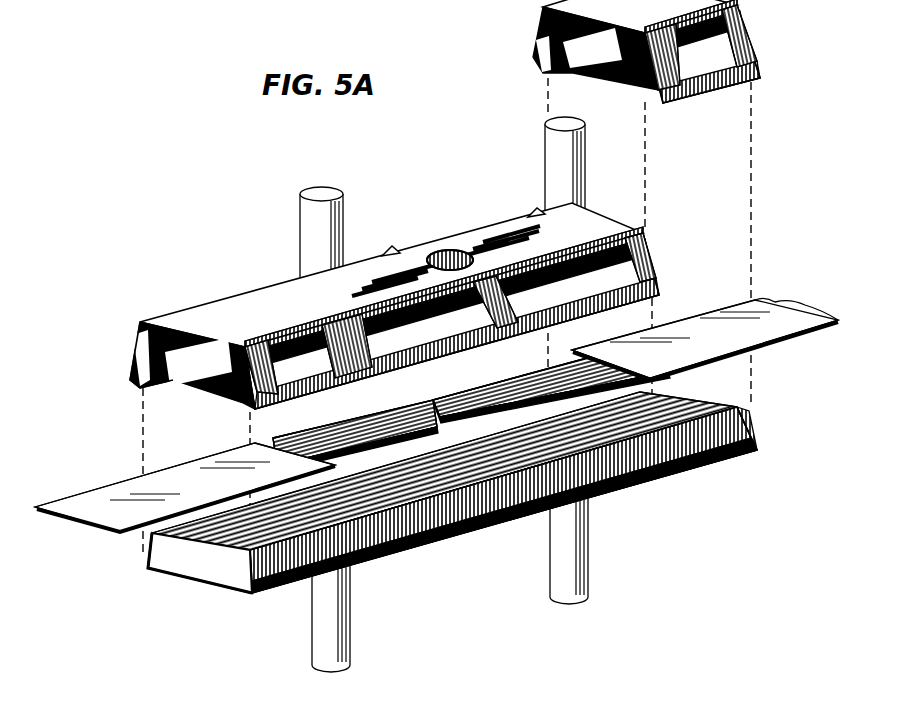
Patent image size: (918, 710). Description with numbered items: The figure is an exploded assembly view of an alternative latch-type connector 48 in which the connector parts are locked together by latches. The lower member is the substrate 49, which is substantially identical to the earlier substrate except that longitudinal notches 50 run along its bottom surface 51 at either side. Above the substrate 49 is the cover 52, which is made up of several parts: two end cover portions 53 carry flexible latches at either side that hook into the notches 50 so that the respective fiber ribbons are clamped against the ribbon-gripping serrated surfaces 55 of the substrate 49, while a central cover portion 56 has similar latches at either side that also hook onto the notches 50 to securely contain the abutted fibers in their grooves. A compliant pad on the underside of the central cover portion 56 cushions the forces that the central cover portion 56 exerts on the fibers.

The connector 48 is at (476, 629).
The substrate 49 is at (147, 563).
The longitudinal notches 50 is at (290, 578).
The bottom surface 51 is at (205, 582).
The cover 52 is at (404, 256).
The end cover portions 53 is at (191, 323).
The ribbon-gripping serrated surfaces 55 is at (692, 400).
The central cover portion 56 is at (657, 262).